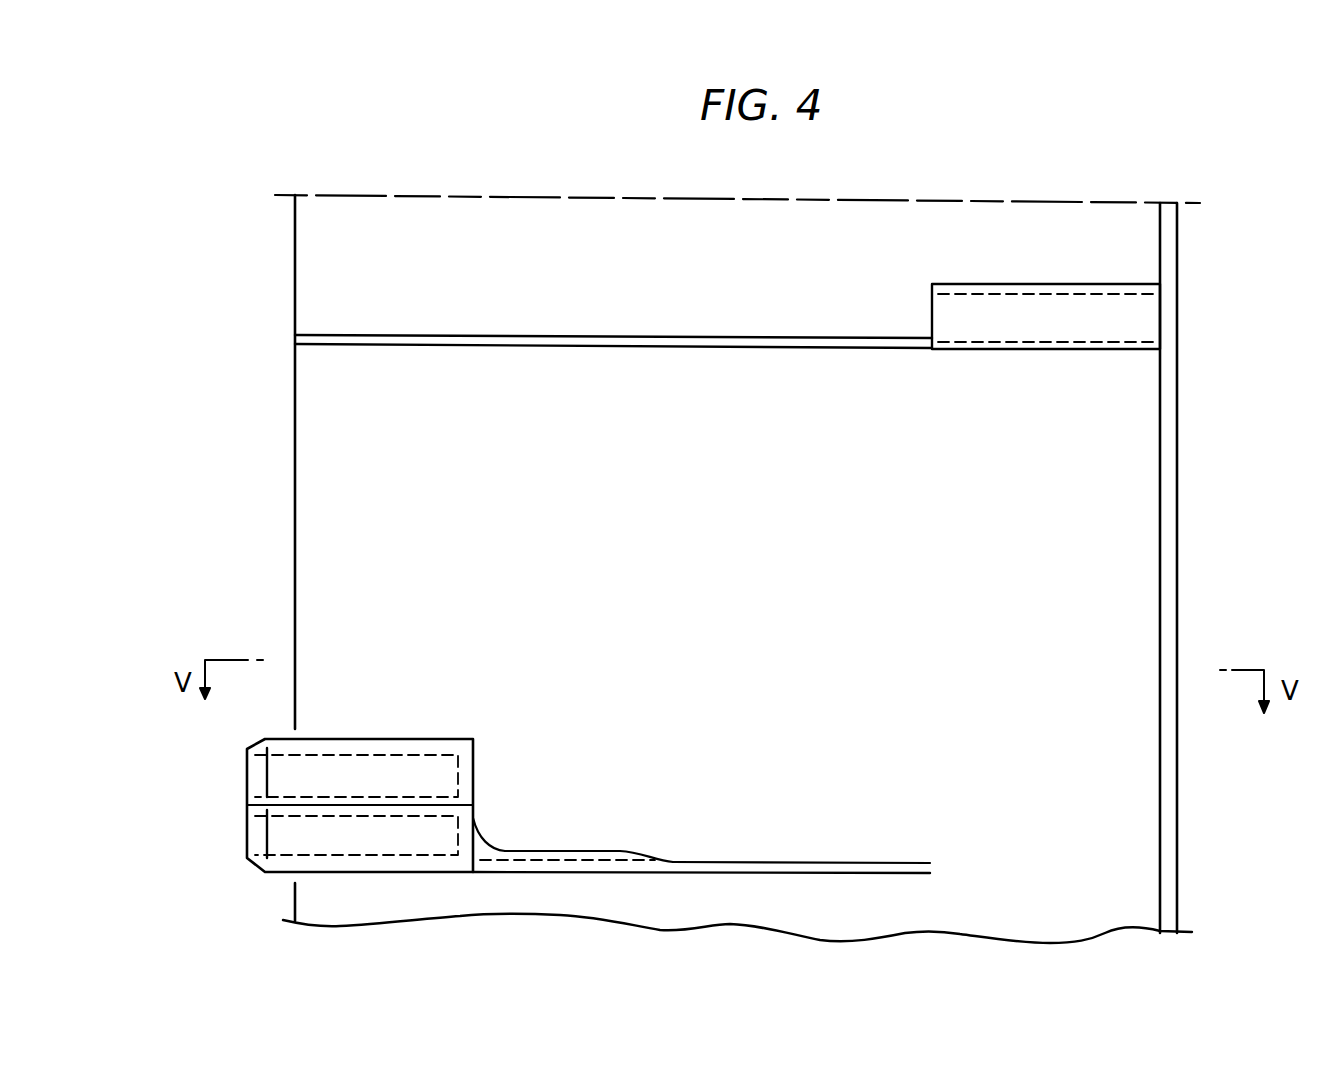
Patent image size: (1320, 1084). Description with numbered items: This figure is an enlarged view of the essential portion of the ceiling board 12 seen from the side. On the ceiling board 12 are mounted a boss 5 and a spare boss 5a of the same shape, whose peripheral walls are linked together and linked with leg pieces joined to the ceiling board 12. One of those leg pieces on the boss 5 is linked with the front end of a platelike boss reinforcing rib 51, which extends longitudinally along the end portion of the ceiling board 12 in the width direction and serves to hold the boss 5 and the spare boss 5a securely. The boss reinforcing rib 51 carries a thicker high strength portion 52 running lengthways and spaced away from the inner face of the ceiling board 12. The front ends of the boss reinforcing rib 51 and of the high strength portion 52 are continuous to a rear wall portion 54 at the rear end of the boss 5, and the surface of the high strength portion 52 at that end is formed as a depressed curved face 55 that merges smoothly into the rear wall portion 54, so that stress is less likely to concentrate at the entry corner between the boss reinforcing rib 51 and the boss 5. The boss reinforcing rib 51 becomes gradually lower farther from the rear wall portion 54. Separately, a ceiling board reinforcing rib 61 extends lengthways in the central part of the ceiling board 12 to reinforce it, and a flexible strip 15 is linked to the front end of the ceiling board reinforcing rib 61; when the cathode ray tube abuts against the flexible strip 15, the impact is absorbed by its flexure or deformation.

The ceiling board 12 is at (294, 487).
The flexible strip 15 is at (1040, 284).
The ceiling board reinforcing rib 61 is at (624, 336).
The boss 5 is at (382, 769).
The spare boss 5a is at (395, 739).
The boss reinforcing rib 51 is at (699, 804).
The high strength portion 52 is at (572, 851).
The rear wall portion 54 is at (468, 834).
The depressed curved face 55 is at (493, 848).